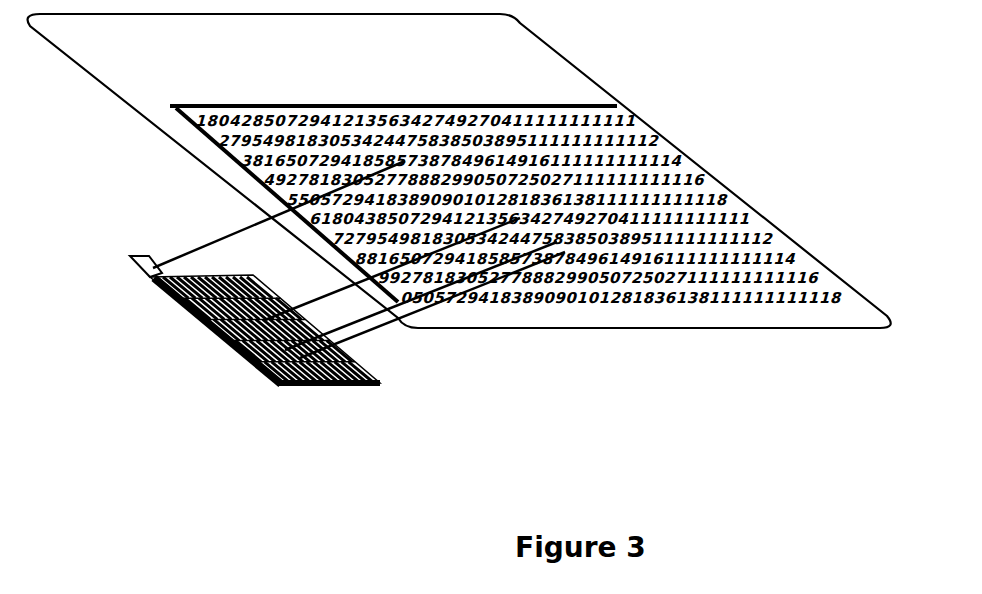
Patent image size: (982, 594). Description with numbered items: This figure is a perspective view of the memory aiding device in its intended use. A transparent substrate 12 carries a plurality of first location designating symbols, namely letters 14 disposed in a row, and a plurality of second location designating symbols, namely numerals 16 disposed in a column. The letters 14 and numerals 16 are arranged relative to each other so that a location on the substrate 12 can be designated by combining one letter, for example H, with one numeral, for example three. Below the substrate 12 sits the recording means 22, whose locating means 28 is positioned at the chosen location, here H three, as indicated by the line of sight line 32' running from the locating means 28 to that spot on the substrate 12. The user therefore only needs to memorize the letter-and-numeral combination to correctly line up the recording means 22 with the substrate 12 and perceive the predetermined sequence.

The transparent substrate 12 is at (600, 86).
The letters 14 is at (582, 90).
The numerals 16 is at (167, 118).
The recording means 22 is at (157, 302).
The locating means 28 is at (153, 266).
The line of sight line 32' is at (279, 214).